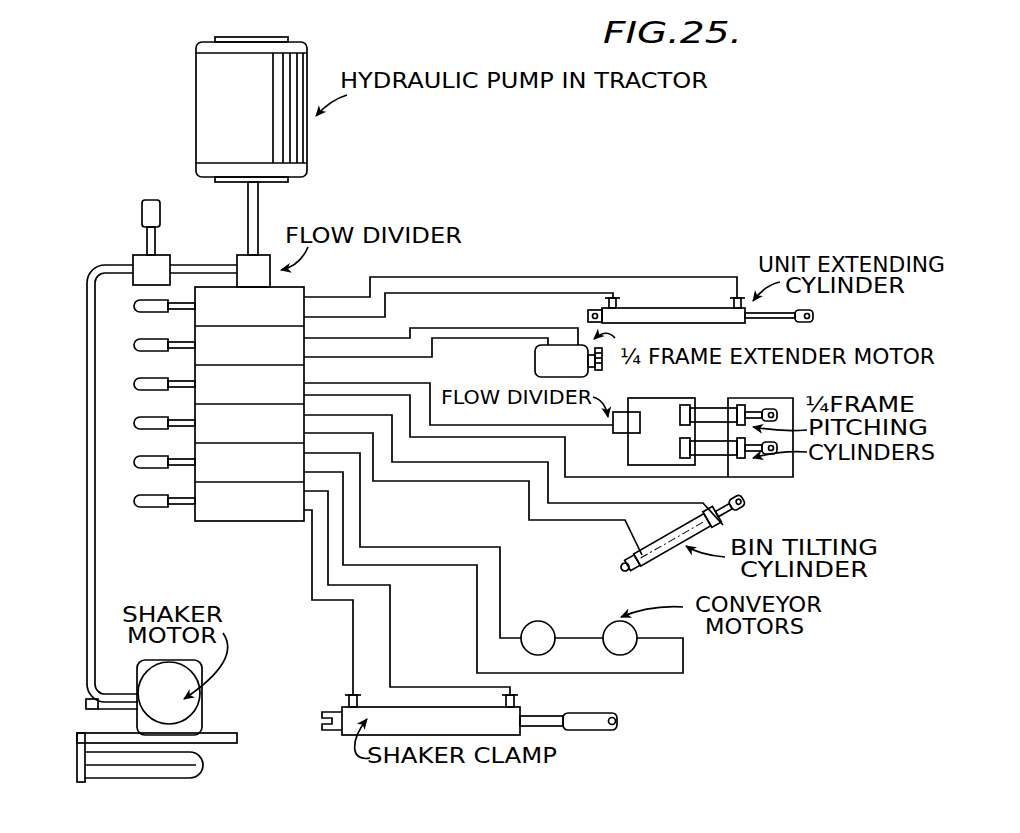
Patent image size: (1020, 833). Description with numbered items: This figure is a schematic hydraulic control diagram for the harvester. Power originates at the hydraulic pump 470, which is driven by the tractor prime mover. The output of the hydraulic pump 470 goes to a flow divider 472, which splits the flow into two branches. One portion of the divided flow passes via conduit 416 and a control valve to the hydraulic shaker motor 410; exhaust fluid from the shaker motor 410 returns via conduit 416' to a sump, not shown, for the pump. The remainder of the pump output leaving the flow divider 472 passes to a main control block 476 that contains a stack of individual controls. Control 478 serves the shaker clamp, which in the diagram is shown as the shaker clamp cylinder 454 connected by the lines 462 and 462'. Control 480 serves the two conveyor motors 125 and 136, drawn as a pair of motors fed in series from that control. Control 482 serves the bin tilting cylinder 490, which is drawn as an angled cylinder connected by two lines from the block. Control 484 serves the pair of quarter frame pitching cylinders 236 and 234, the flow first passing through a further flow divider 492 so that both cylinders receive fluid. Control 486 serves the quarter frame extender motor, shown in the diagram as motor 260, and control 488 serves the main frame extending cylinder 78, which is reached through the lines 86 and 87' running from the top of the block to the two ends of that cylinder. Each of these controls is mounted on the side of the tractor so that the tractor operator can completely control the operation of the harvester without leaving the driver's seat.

The hydraulic pump 470 is at (272, 114).
The flow divider 472 is at (243, 253).
The main control block 476 is at (227, 538).
The control for the shaker clamp 478 is at (273, 515).
The control for the conveyor motors 480 is at (273, 476).
The control for the bin tilting cylinder 482 is at (273, 437).
The control for the quarter frame pitching cylinders 484 is at (273, 398).
The control for the frame extender motor 486 is at (273, 359).
The control for the main frame extending cylinder 488 is at (273, 320).
The conduit 416 is at (128, 483).
The conduit 416' is at (73, 690).
The hydraulic shaker motor 410 is at (190, 728).
The shaker clamp line 462 is at (320, 608).
The shaker clamp line 462' is at (411, 599).
The shaker clamp cylinder 454 is at (453, 731).
The conveyor motor 136 is at (550, 610).
The conveyor motor 125 is at (615, 622).
The bin tilting cylinder 490 is at (650, 547).
The quarter frame pitching cylinder 234 is at (718, 448).
The quarter frame pitching cylinder 236 is at (703, 415).
The further flow divider 492 is at (610, 420).
The quarter frame extender motor 260 is at (535, 362).
The main frame extending cylinder 78 is at (668, 308).
The hydraulic line 86 is at (545, 293).
The hydraulic line 87' is at (520, 266).